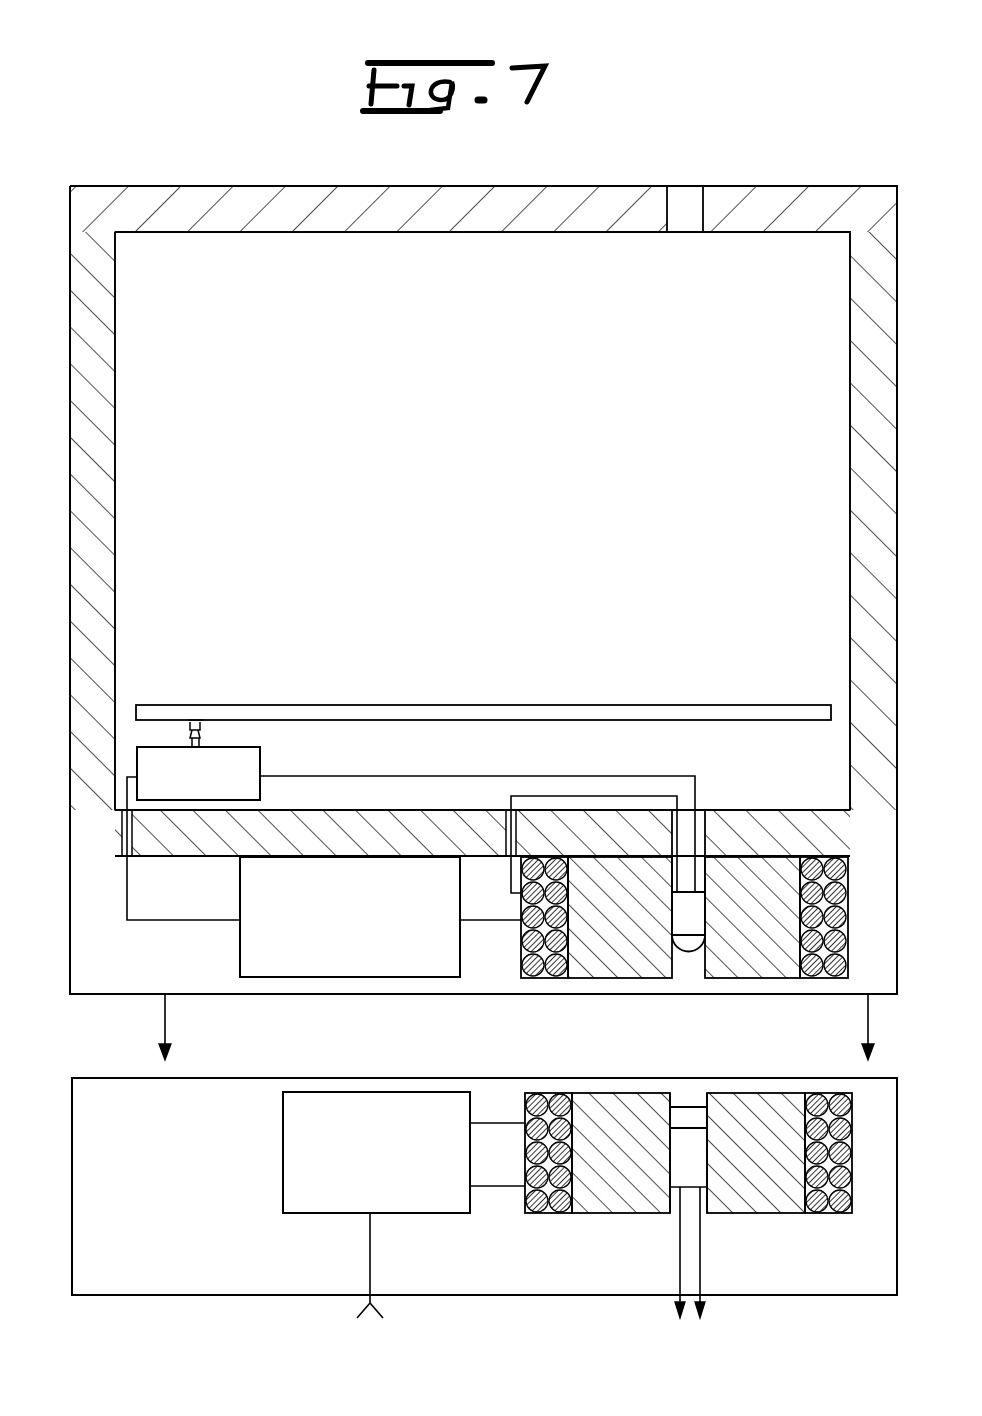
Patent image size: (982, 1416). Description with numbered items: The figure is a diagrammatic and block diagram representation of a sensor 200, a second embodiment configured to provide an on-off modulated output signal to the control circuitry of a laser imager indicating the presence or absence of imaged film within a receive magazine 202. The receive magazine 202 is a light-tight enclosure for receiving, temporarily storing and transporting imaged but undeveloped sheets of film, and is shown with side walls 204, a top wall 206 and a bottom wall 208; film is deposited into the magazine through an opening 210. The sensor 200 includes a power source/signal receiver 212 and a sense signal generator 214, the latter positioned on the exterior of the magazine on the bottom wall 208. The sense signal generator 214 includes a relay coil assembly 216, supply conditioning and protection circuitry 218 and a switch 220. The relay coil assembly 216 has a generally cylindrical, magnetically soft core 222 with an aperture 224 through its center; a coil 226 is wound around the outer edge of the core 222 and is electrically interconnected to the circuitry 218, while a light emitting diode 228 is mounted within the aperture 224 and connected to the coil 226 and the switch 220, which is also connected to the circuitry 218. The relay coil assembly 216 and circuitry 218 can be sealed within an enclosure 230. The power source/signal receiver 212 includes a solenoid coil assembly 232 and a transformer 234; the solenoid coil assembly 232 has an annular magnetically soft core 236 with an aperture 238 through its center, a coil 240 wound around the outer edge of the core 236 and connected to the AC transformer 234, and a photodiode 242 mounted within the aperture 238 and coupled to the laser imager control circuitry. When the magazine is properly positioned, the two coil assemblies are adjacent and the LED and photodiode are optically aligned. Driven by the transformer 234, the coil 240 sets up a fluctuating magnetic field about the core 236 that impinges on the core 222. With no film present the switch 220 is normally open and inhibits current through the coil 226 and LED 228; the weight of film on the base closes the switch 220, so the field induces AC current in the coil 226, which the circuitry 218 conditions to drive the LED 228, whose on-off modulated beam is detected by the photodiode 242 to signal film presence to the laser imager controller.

The sensor 200 is at (660, 103).
The receive magazine 202 is at (161, 178).
The side walls 204 is at (116, 475).
The top wall 206 is at (221, 234).
The bottom wall 208 is at (778, 810).
The opening 210 is at (689, 200).
The power source/signal receiver 212 is at (559, 1305).
The sense signal generator 214 is at (66, 1004).
The relay coil assembly 216 is at (514, 966).
The supply conditioning and protection circuitry 218 is at (240, 952).
The switch 220 is at (261, 768).
The core 222 is at (777, 968).
The aperture 224 is at (675, 967).
The coil 226 is at (553, 979).
The light emitting diode 228 is at (693, 943).
The enclosure 230 is at (120, 995).
The solenoid coil assembly 232 is at (516, 1100).
The transformer 234 is at (283, 1117).
The core 236 is at (623, 1100).
The aperture 238 is at (699, 1097).
The coil 240 is at (533, 1213).
The photodiode 242 is at (683, 1173).